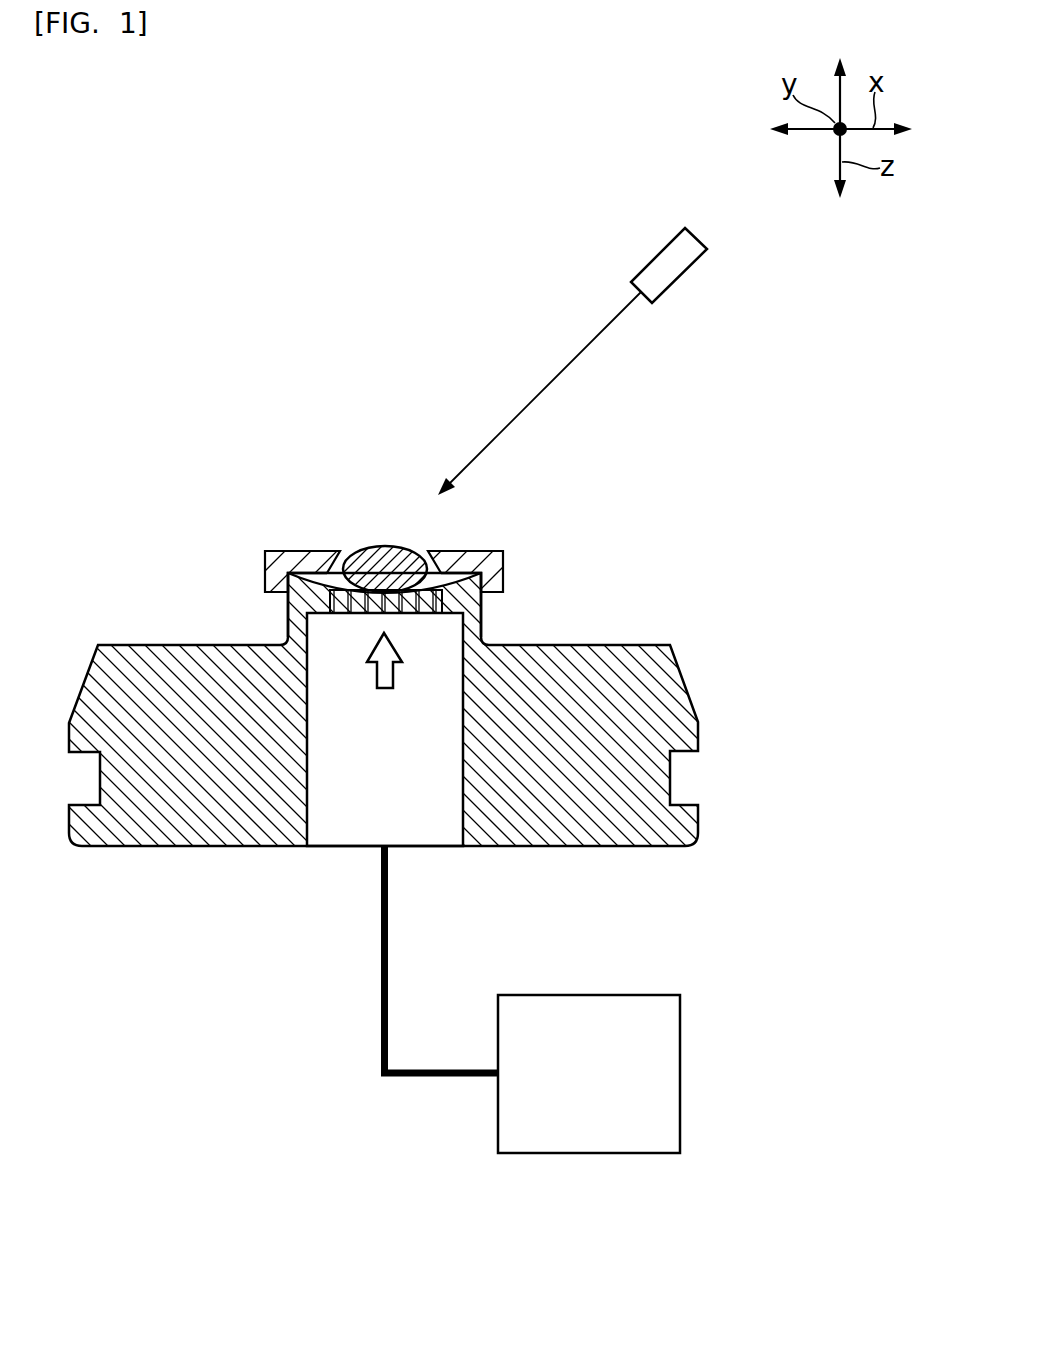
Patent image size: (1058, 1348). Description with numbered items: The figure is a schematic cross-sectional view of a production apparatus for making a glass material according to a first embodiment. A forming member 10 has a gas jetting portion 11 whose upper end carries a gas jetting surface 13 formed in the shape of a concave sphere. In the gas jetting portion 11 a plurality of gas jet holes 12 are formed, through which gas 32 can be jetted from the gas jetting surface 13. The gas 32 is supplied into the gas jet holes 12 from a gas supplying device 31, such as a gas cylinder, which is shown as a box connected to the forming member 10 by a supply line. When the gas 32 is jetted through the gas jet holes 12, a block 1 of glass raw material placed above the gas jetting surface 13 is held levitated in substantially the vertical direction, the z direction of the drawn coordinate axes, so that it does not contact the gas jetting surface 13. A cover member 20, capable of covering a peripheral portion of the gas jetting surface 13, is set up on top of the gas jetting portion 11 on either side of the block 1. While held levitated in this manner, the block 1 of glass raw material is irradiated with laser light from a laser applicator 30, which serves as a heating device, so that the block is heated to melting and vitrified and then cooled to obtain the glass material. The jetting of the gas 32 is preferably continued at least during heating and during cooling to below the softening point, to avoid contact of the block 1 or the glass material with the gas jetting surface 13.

The block of glass raw material 1 is at (367, 550).
The forming member 10 is at (279, 608).
The gas jetting portion 11 is at (482, 610).
The gas jet holes 12 is at (297, 573).
The gas jetting surface 13 is at (416, 590).
The cover member 20 is at (503, 548).
The laser applicator 30 is at (668, 287).
The gas supplying device 31 is at (593, 1153).
The gas 32 is at (375, 676).